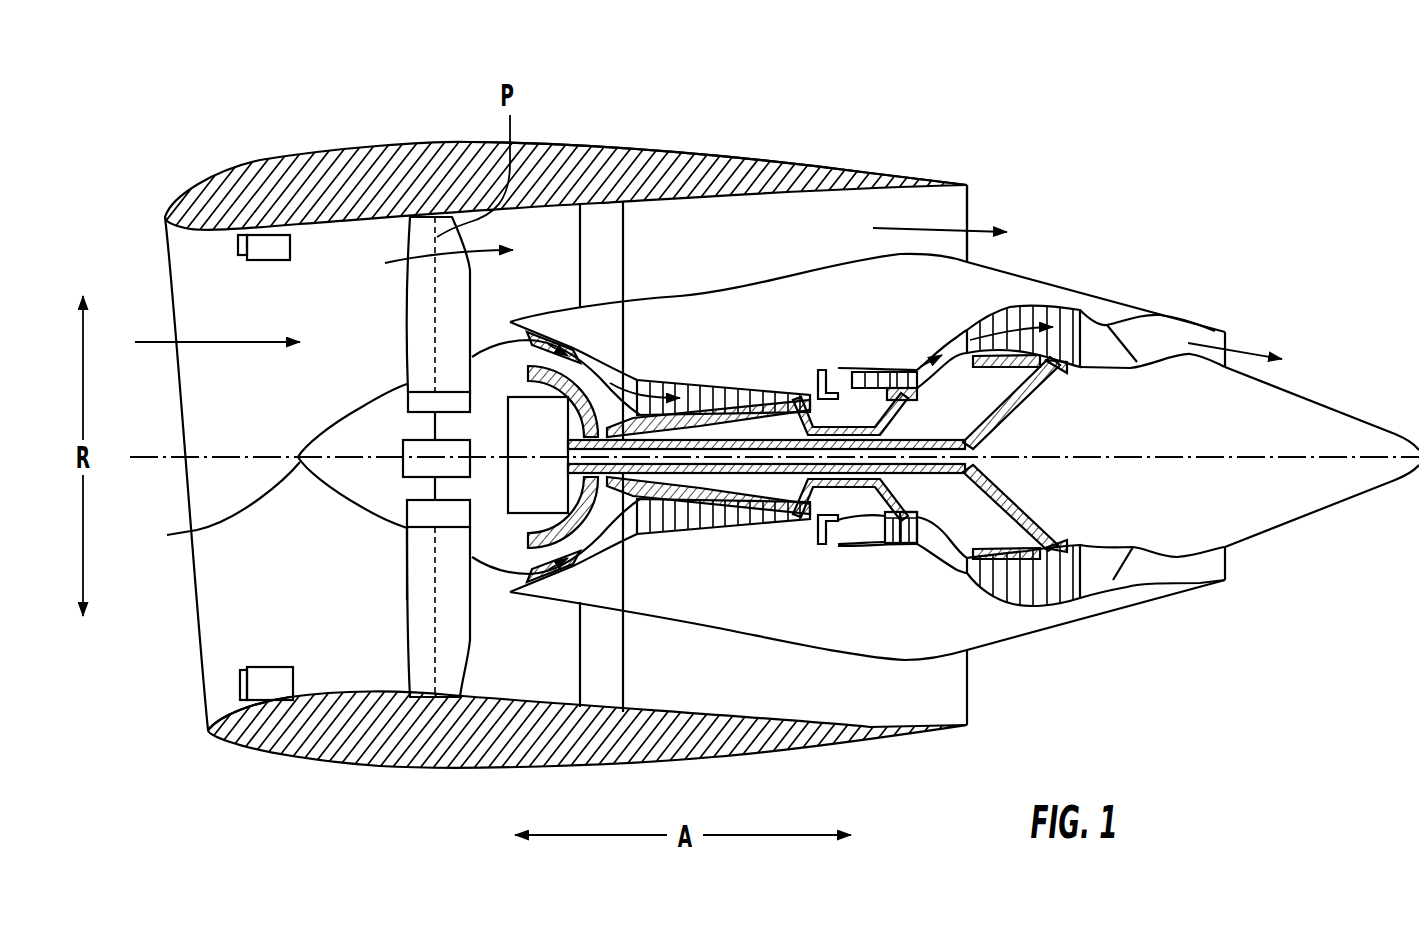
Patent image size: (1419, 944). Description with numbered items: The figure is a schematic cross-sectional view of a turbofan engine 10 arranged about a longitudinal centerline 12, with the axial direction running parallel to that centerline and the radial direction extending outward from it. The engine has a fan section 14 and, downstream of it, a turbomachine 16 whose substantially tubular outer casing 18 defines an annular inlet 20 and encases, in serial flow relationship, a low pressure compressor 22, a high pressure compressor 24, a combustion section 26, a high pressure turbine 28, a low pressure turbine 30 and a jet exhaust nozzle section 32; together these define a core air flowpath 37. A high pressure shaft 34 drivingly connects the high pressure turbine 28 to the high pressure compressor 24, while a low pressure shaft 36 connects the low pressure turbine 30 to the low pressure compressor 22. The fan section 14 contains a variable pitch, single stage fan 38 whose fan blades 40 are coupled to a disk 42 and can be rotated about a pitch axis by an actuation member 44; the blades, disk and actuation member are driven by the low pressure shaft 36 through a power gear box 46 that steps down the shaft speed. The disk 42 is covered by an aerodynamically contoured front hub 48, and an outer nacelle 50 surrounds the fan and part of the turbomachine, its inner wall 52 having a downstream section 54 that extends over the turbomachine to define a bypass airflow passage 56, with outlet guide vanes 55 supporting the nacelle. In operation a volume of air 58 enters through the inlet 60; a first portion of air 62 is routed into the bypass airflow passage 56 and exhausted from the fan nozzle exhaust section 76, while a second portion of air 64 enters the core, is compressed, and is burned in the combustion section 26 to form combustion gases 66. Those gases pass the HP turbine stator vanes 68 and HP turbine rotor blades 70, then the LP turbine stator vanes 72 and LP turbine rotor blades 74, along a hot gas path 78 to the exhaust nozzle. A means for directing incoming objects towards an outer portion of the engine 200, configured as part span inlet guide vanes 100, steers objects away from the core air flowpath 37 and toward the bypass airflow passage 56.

The turbofan engine 10 is at (1128, 160).
The longitudinal centerline 12 is at (1157, 455).
The fan section 14 is at (566, 445).
The turbomachine 16 is at (850, 454).
The outer casing 18 is at (805, 648).
The annular inlet 20 is at (513, 577).
The low pressure compressor 22 is at (625, 540).
The high pressure compressor 24 is at (657, 517).
The combustion section 26 is at (837, 530).
The high pressure turbine 28 is at (920, 535).
The low pressure turbine 30 is at (1060, 600).
The jet exhaust nozzle section 32 is at (1130, 580).
The high pressure shaft 34 is at (867, 422).
The low pressure shaft 36 is at (925, 437).
The core air flowpath 37 is at (947, 563).
The fan 38 is at (367, 516).
The fan blades 40 is at (400, 627).
The disk 42 is at (423, 403).
The actuation member 44 is at (405, 452).
The power gear box 46 is at (548, 416).
The front nacelle or hub 48 is at (217, 508).
The outer nacelle 50 is at (458, 767).
The inner wall 52 is at (333, 224).
The downstream section 54 is at (903, 172).
The outlet guide vanes 55 is at (623, 240).
The bypass airflow passage 56 is at (780, 248).
The volume of air 58 is at (167, 342).
The inlet 60 is at (199, 700).
The first portion of air 62 is at (423, 263).
The second portion of air 64 is at (490, 333).
The combustion gases 66 is at (868, 393).
The HP turbine stator vanes 68 is at (870, 530).
The HP turbine rotor blades 70 is at (890, 543).
The LP turbine stator vanes 72 is at (977, 570).
The LP turbine rotor blades 74 is at (990, 597).
The fan nozzle exhaust section 76 is at (957, 213).
The hot gas path 78 is at (948, 346).
The part span inlet guide vanes 100 is at (273, 240).
The means for directing incoming objects towards an outer portion of the turbofan en 200 is at (243, 260).